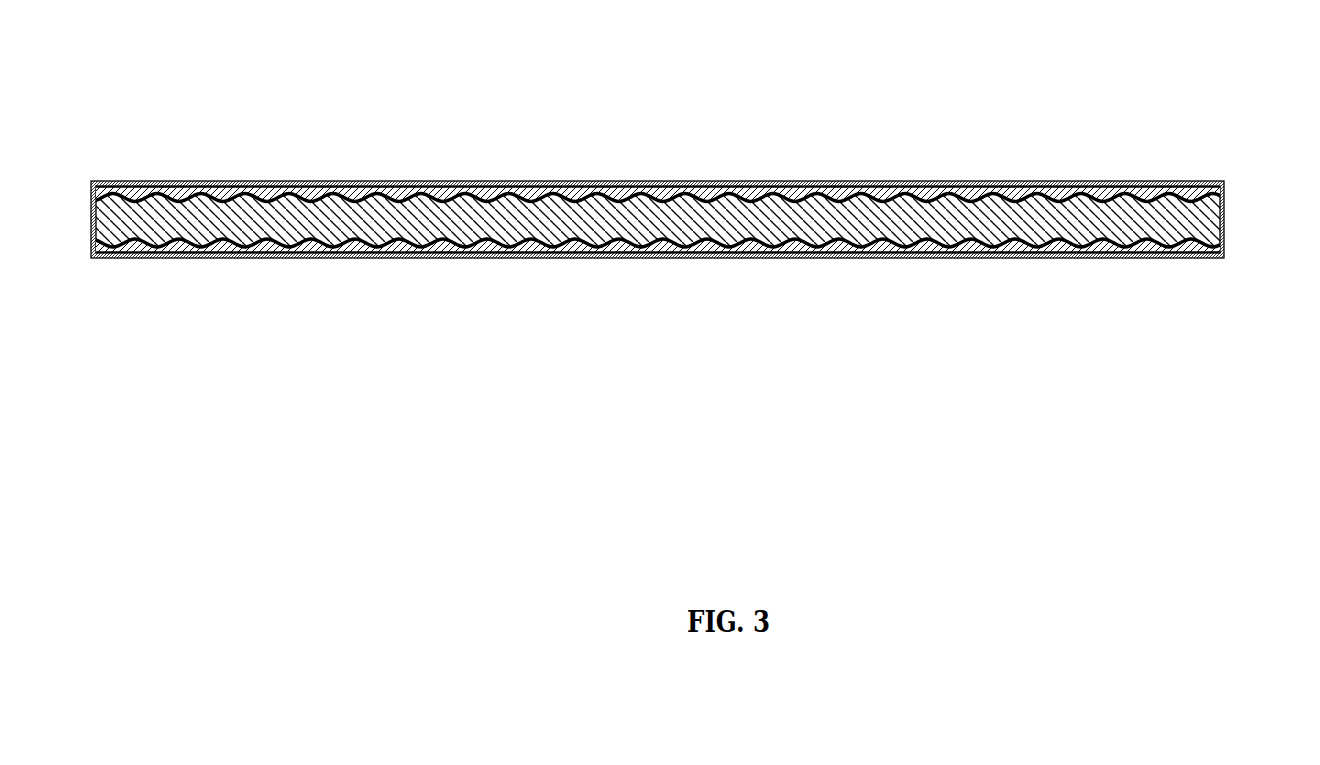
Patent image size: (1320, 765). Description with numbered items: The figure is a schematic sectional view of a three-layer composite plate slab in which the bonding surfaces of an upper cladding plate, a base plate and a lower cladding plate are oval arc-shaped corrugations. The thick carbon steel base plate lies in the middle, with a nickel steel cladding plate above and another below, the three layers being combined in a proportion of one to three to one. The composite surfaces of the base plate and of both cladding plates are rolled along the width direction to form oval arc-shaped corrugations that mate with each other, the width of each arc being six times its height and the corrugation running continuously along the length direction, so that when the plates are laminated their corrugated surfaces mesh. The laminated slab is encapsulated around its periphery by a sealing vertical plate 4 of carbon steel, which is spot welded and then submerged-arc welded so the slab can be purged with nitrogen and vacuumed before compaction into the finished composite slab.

The vertical plate 4 is at (1225, 203).